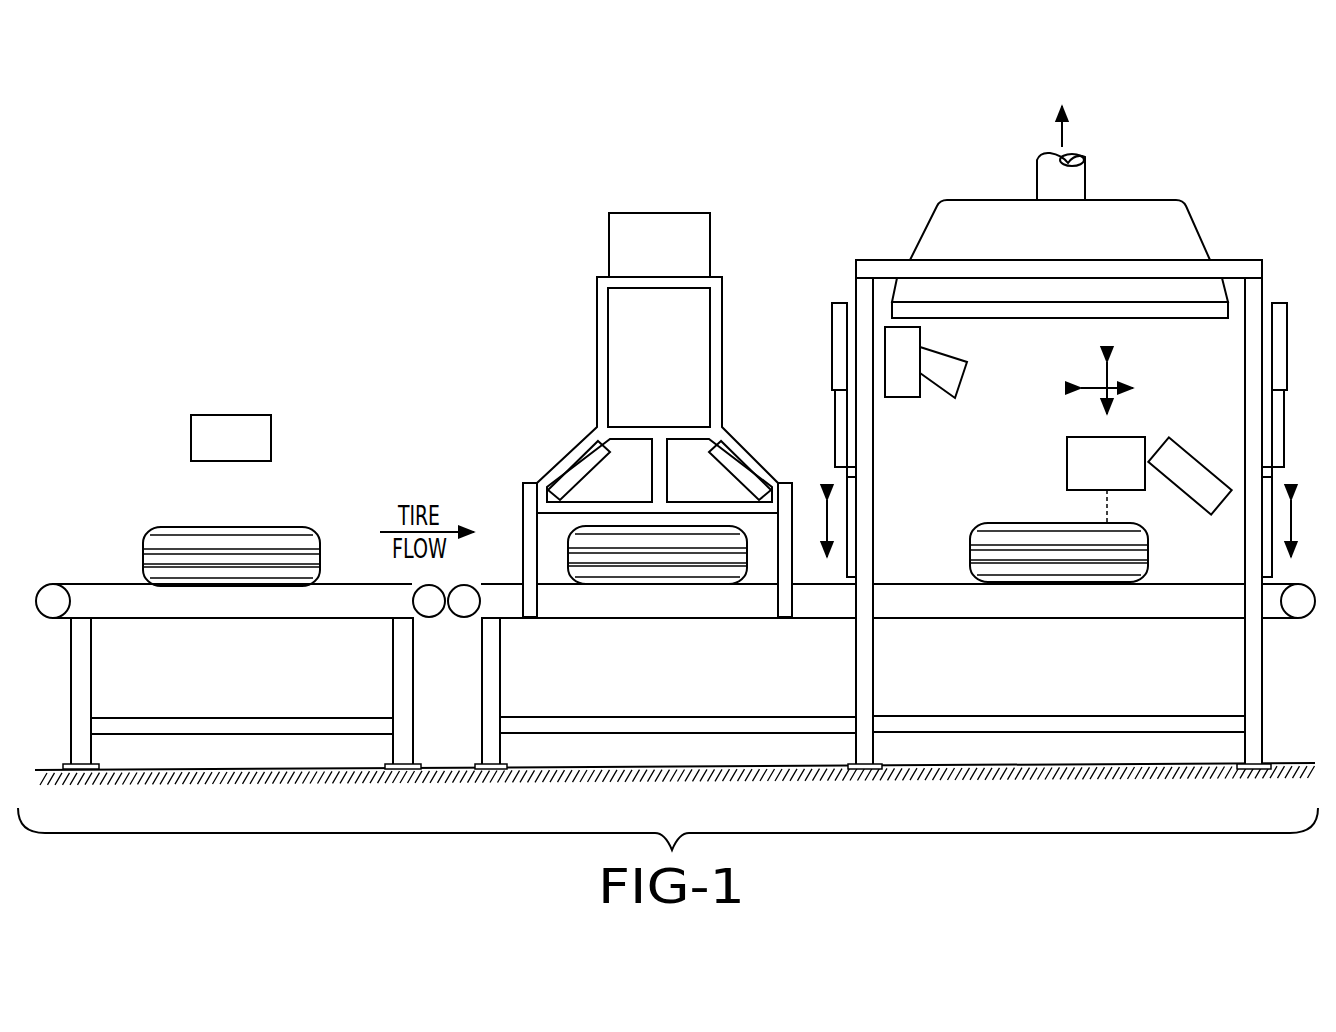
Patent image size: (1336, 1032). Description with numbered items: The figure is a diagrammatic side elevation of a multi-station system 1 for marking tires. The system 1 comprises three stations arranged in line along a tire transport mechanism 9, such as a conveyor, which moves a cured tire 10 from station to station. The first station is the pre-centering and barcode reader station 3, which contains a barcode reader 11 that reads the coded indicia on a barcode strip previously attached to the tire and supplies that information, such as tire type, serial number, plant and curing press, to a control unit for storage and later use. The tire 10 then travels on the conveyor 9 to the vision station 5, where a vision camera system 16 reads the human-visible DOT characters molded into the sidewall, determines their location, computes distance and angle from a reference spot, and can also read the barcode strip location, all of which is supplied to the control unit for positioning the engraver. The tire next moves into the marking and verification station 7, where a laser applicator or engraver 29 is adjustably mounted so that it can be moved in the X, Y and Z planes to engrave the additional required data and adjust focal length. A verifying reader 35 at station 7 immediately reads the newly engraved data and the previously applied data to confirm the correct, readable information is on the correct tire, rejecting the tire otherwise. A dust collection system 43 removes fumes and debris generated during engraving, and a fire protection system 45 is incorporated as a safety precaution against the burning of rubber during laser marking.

The system 1 is at (334, 278).
The pre-centering and barcode reader station 3 is at (130, 492).
The vision station 5 is at (565, 430).
The marking and verification station 7 is at (1218, 230).
The tire transport mechanism 9 is at (101, 584).
The tire 10 is at (270, 527).
The barcode reader 11 is at (197, 438).
The vision camera system 16 is at (613, 240).
The laser applicator or engraver 29 is at (1139, 438).
The verifying reader 35 is at (1197, 505).
The dust collection system 43 is at (934, 229).
The fire protection system 45 is at (952, 363).